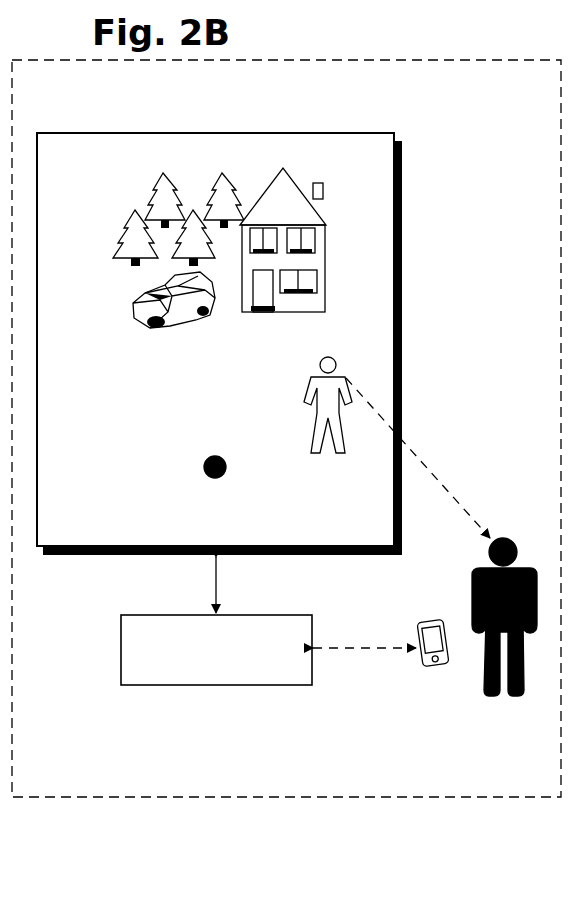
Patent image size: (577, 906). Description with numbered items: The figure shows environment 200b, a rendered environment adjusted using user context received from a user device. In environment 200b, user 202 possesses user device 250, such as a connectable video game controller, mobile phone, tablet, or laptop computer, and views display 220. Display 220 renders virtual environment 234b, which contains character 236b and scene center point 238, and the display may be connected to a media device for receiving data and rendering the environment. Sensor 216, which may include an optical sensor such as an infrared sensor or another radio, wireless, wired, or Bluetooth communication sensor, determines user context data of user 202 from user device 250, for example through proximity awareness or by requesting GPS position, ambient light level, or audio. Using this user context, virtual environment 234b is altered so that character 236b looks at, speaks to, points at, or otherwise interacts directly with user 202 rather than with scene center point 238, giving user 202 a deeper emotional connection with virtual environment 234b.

The environment 200b is at (432, 172).
The display 220 is at (211, 133).
The virtual environment 234b is at (216, 236).
The character 236b is at (329, 357).
The scene center point 238 is at (215, 478).
The sensor 216 is at (216, 650).
The user device 250 is at (434, 672).
The user 202 is at (503, 703).